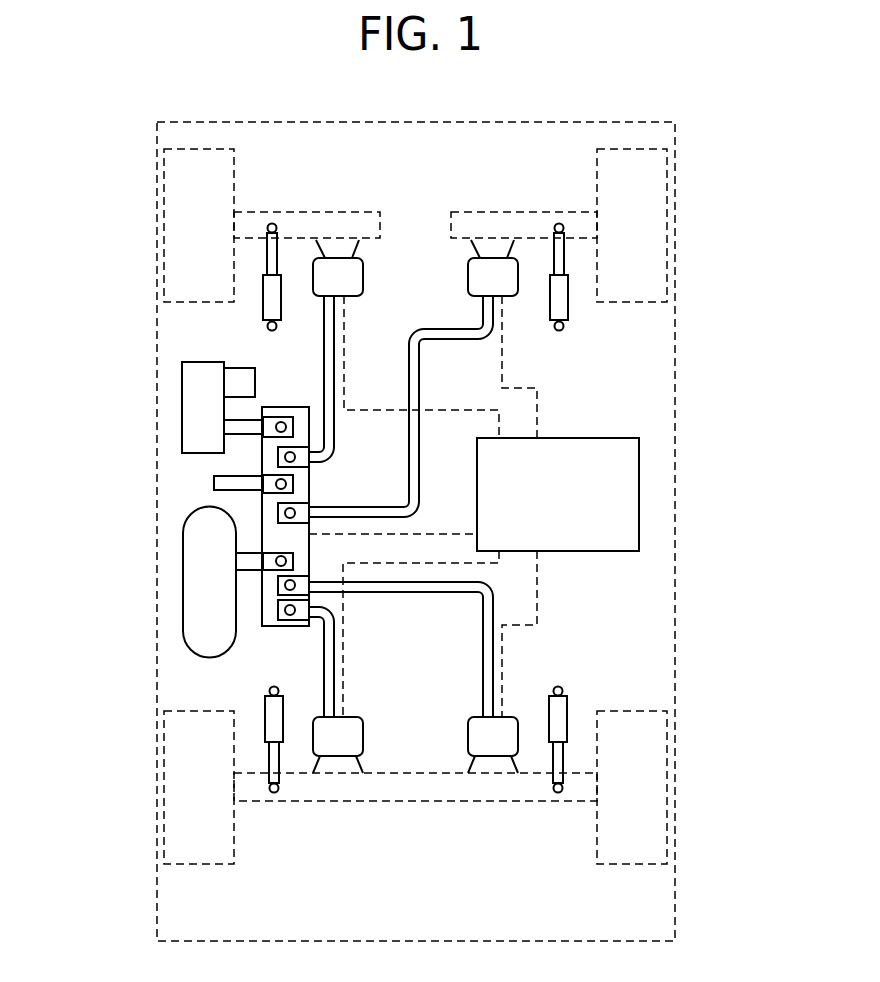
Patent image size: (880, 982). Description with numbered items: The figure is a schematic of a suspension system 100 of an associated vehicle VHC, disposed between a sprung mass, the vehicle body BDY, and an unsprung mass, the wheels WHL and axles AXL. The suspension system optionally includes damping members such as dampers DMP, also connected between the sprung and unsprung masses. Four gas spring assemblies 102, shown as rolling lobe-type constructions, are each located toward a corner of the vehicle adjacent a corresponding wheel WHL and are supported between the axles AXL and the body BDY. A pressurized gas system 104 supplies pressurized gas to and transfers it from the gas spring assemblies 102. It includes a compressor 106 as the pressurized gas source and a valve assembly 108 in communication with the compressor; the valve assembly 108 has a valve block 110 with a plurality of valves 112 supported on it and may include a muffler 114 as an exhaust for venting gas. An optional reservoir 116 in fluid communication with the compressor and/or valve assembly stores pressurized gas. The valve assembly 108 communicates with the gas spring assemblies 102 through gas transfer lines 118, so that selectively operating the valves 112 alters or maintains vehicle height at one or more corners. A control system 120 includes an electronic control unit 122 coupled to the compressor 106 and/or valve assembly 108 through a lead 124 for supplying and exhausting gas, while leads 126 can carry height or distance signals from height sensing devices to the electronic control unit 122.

The suspension system 100 is at (652, 347).
The gas spring assemblies 102 is at (372, 279).
The pressurized gas system 104 is at (165, 462).
The compressor 106 is at (188, 380).
The valve assembly 108 is at (288, 400).
The valve block 110 is at (281, 628).
The valves 112 is at (290, 457).
The muffler 114 is at (213, 480).
The reservoir 116 is at (190, 567).
The gas transfer lines 118 is at (420, 363).
The control system 120 is at (595, 426).
The electronic control unit 122 is at (570, 505).
The lead 124 is at (438, 534).
The leads 126 is at (344, 328).
The vehicle VHC is at (612, 99).
The vehicle body BDY is at (515, 121).
The wheel WHL is at (177, 208).
The axle AXL is at (345, 213).
The dampers DMP is at (260, 313).